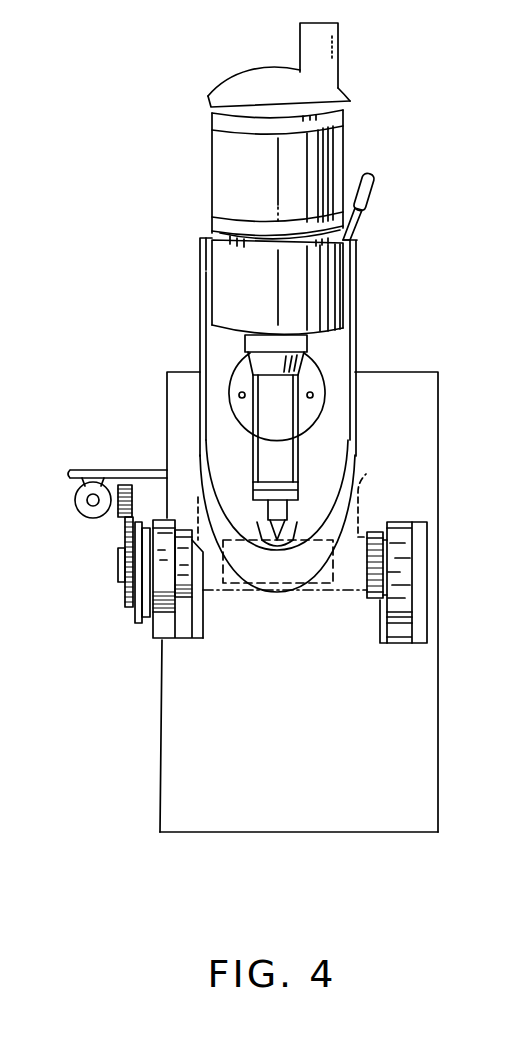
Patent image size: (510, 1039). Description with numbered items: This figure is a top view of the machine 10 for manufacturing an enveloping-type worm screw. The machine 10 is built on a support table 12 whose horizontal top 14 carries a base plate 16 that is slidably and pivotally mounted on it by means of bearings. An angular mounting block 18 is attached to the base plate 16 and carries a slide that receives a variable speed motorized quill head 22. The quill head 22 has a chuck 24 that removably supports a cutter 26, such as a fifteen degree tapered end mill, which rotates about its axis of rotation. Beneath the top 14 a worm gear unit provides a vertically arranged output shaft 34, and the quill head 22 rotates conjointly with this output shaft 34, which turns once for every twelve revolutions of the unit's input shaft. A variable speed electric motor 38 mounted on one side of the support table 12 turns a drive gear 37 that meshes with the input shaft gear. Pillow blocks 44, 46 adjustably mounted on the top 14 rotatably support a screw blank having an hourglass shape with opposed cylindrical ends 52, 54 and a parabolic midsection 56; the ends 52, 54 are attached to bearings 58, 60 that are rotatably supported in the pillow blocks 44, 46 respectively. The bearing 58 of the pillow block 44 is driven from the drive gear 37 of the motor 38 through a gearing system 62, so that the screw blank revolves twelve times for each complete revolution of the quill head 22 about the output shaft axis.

The machine 10 is at (236, 62).
The support table 12 is at (225, 833).
The horizontal top 14 is at (283, 757).
The base plate 16 is at (297, 588).
The angular mounting block 18 is at (357, 333).
The variable speed motorized quill head 22 is at (300, 458).
The chuck 24 is at (287, 522).
The cutter 26 is at (257, 528).
The output shaft 34 is at (275, 546).
The drive gear 37 is at (127, 484).
The variable speed electric motor 38 is at (80, 516).
The pillow block 44 is at (158, 614).
The pillow block 46 is at (396, 522).
The cylindrical end 52 is at (199, 535).
The cylindrical end 54 is at (377, 502).
The parabolic midsection 56 is at (279, 592).
The bearing 58 is at (186, 600).
The bearing 60 is at (370, 600).
The gearing system 62 is at (98, 596).